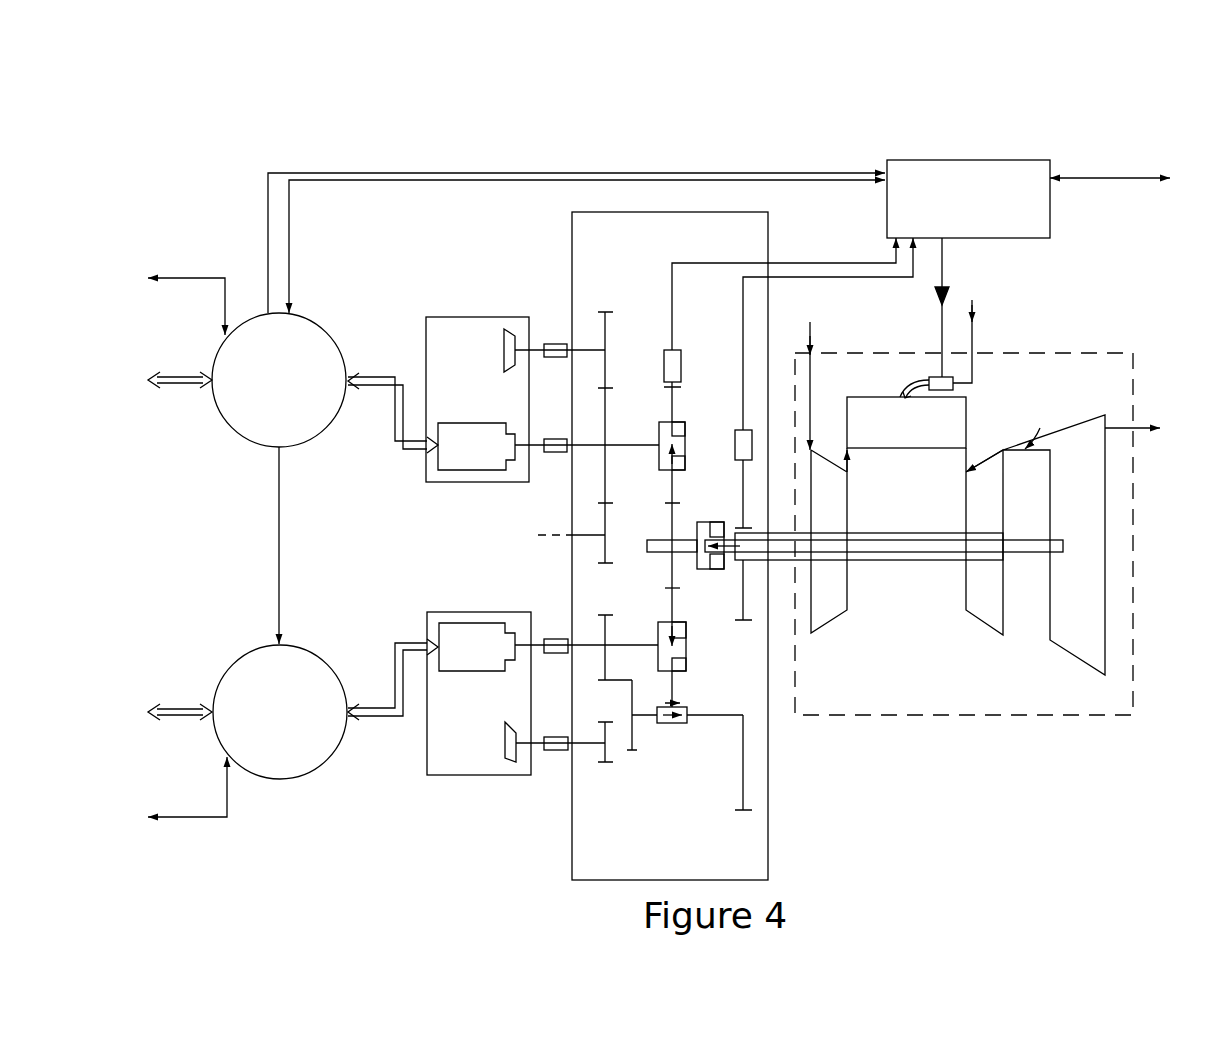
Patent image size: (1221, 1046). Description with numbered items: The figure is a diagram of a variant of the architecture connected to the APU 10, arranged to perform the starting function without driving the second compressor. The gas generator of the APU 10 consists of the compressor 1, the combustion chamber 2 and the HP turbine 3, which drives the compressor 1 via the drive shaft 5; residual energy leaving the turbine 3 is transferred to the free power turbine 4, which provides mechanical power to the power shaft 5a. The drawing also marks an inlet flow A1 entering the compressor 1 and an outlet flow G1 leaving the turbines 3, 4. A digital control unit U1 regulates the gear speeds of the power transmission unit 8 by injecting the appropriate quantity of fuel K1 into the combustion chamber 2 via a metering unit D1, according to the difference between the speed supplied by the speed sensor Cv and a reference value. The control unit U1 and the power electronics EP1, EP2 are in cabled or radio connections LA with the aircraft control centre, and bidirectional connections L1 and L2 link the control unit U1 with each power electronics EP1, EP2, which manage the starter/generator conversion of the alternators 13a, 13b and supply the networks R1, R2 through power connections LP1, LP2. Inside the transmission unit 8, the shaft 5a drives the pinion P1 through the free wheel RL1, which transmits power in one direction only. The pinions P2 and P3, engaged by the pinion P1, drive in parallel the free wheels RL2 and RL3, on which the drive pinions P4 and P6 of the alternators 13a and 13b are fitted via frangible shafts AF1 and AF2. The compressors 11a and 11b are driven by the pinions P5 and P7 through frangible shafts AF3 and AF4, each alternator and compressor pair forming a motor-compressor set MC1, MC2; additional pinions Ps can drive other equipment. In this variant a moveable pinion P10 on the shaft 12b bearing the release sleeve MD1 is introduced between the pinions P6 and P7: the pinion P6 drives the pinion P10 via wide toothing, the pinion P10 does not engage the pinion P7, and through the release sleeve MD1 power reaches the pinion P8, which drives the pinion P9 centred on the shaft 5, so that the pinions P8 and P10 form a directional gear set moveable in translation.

The digital control unit U1 is at (1050, 160).
The bidirectional connection L2 is at (390, 173).
The bidirectional connection L1 is at (390, 180).
The aircraft connection LA is at (654, 499).
The power transmission unit 8 is at (768, 212).
The power electronics EP1 is at (279, 478).
The power electronics EP2 is at (280, 712).
The network R1 is at (148, 402).
The network R2 is at (148, 737).
The power connection LP1 is at (377, 377).
The power connection LP2 is at (395, 641).
The motor-compressor set MC1 is at (426, 482).
The motor-compressor set MC2 is at (452, 611).
The alternator 13a is at (462, 471).
The alternator 13b is at (472, 622).
The load compressor 11a is at (505, 332).
The load compressor 11b is at (510, 763).
The frangible shaft AF1 is at (556, 431).
The frangible shaft AF2 is at (556, 639).
The frangible shaft AF3 is at (553, 344).
The frangible shaft AF4 is at (556, 751).
The pinion P5 is at (606, 325).
The drive pinion P4 is at (607, 496).
The additional pinion Ps is at (607, 560).
The drive pinion P6 is at (607, 646).
The moveable pinion P10 is at (632, 733).
The pinion P7 is at (614, 762).
The speed sensor Cv is at (684, 365).
The pinion P2 is at (672, 393).
The free wheel RL2 is at (661, 421).
The pinion P1 is at (664, 546).
The free wheel RL1 is at (712, 522).
The pinion P3 is at (672, 592).
The free wheel RL3 is at (660, 622).
The release sleeve MD1 is at (688, 707).
The shaft 12b is at (728, 715).
The pinion P8 is at (735, 809).
The pinion P9 is at (743, 488).
The APU 10 is at (1102, 370).
The fuel K1 is at (960, 310).
The metering unit D1 is at (921, 377).
The air intake A1 is at (866, 464).
The combustion chamber 2 is at (847, 413).
The compressor 1 is at (832, 615).
The HP turbine 3 is at (975, 610).
The power turbine 4 is at (1065, 645).
The combustion gas flow G1 is at (967, 468).
The drive shaft 5 is at (856, 533).
The power shaft 5a is at (921, 548).